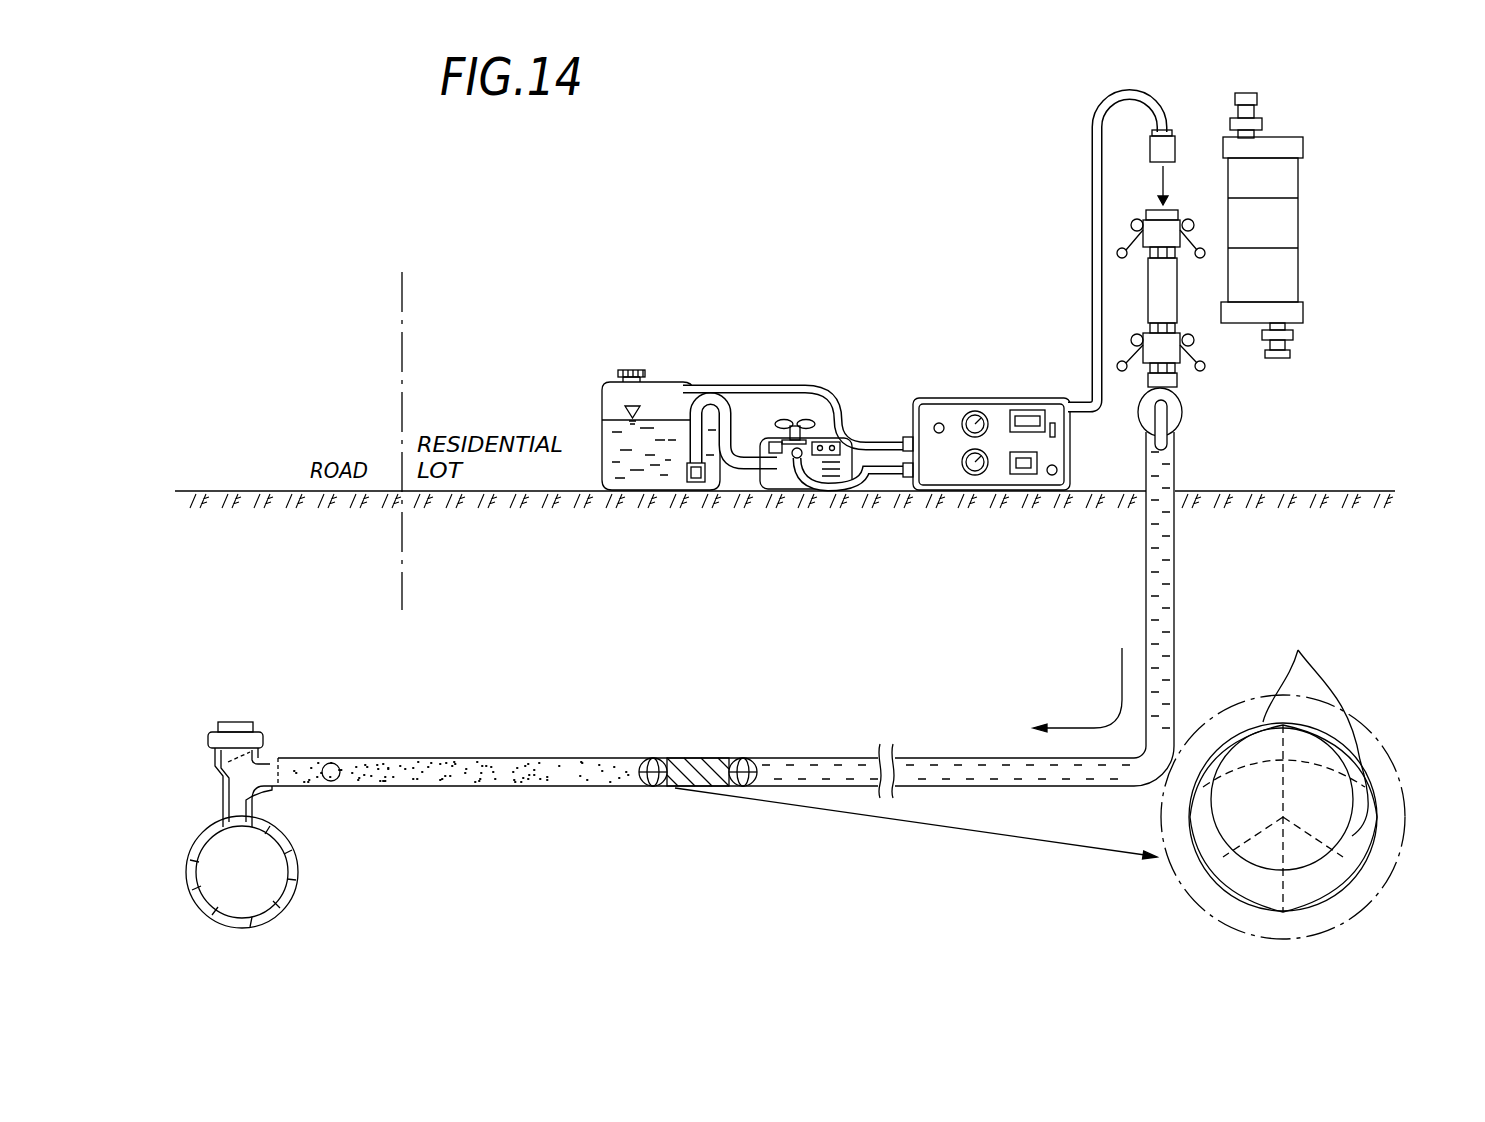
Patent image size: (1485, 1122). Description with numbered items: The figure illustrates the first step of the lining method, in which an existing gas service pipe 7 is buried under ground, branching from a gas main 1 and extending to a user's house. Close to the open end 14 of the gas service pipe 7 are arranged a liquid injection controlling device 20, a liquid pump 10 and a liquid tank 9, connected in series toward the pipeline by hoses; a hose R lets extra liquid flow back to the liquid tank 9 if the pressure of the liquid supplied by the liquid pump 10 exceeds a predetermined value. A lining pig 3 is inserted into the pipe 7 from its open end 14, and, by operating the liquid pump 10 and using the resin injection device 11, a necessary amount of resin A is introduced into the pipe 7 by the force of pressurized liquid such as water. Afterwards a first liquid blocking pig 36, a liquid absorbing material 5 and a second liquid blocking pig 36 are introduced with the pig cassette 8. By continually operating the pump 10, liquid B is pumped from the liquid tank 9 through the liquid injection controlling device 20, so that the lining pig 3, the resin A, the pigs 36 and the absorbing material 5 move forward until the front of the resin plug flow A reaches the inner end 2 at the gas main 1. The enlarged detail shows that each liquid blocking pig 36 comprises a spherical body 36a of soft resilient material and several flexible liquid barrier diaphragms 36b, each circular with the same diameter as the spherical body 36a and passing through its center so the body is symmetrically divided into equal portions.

The gas main 1 is at (293, 888).
The inner end 2 is at (278, 755).
The lining pig 3 is at (331, 781).
The liquid absorbing material 5 is at (706, 758).
The gas service pipe 7 is at (312, 758).
The pig cassette 8 is at (1160, 296).
The liquid tank 9 is at (613, 388).
The liquid pump 10 is at (777, 476).
The resin injection device 11 is at (1278, 168).
The open end 14 is at (1175, 438).
The liquid injection controlling device 20 is at (997, 398).
The liquid blocking pig 36 is at (757, 758).
The spherical body 36a is at (1231, 743).
The flexible liquid barrier diaphragms 36b is at (1300, 652).
The resin A is at (453, 768).
The hose R is at (815, 386).
The liquid B is at (628, 480).